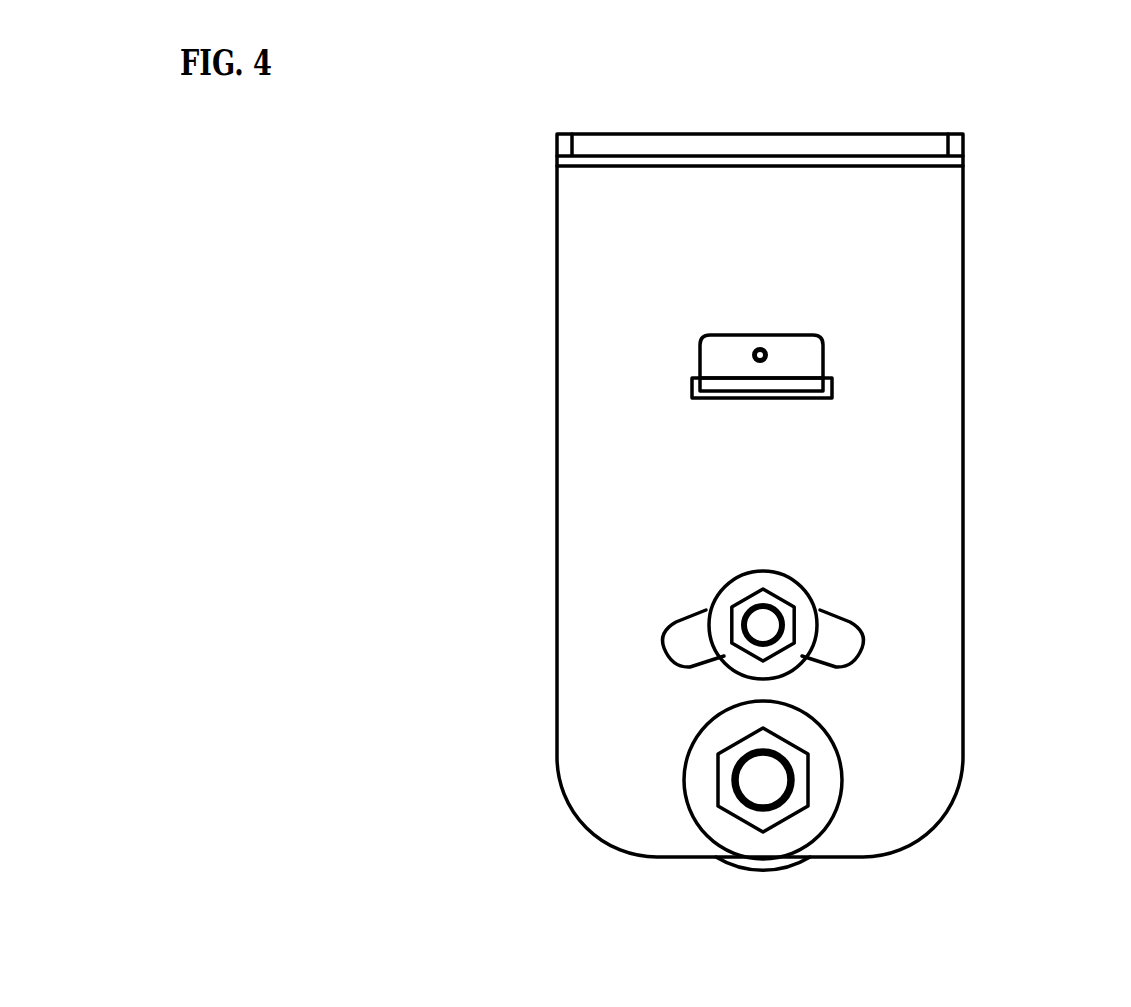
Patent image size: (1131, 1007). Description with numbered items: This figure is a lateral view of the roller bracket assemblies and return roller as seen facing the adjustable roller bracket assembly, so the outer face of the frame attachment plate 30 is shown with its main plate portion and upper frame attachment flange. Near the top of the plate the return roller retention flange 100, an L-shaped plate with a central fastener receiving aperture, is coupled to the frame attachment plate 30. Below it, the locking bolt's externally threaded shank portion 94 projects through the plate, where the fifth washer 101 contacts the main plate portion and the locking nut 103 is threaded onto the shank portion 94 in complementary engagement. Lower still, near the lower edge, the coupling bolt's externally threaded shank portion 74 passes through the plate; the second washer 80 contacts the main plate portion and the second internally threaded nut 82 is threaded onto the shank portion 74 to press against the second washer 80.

The frame attachment plate 30 is at (966, 291).
The return roller retention flange 100 is at (716, 352).
The fifth washer 101 is at (722, 622).
The locking nut 103 is at (790, 641).
The externally threaded shank portion 94 is at (766, 627).
The second washer 80 is at (822, 784).
The second internally threaded nut 82 is at (747, 806).
The externally threaded shank portion 74 is at (760, 787).